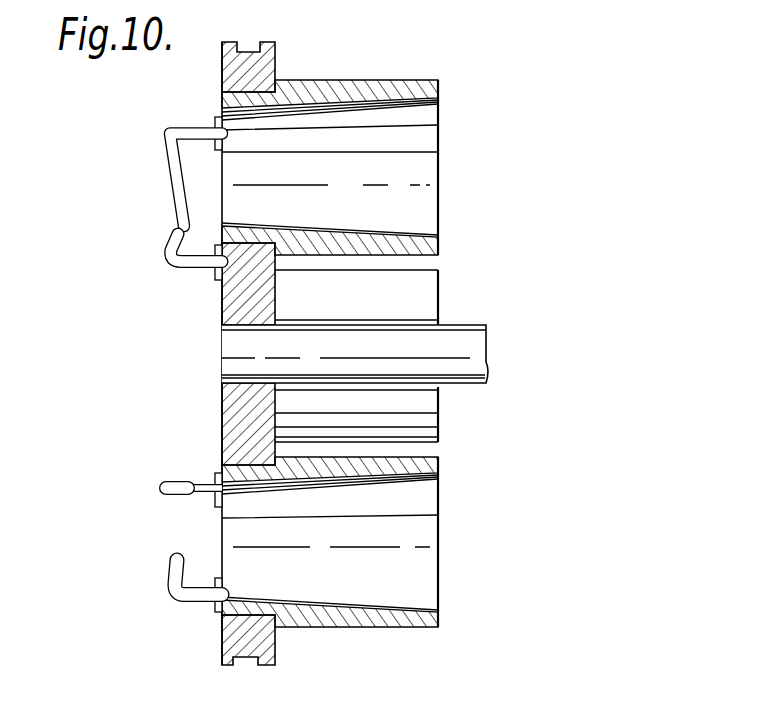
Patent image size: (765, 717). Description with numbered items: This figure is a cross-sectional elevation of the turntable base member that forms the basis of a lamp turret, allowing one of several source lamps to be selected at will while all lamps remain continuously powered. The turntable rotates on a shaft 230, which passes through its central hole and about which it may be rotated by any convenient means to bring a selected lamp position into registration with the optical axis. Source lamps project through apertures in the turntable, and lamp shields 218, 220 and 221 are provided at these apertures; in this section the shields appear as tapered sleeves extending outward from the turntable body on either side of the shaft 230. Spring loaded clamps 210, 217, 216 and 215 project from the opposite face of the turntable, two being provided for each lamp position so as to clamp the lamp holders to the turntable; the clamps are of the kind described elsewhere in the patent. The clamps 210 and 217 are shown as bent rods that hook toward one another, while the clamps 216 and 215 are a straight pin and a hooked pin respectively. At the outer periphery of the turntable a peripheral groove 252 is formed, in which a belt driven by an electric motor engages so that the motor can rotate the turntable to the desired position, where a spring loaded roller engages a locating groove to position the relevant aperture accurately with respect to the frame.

The spring loaded clamp 210 is at (178, 128).
The spring loaded clamp 215 is at (178, 598).
The spring loaded clamp 216 is at (170, 484).
The spring loaded clamp 217 is at (183, 271).
The lamp shield 218 is at (395, 85).
The lamp shield 220 is at (392, 628).
The lamp shield 221 is at (439, 421).
The shaft 230 is at (465, 333).
The peripheral groove 252 is at (250, 44).